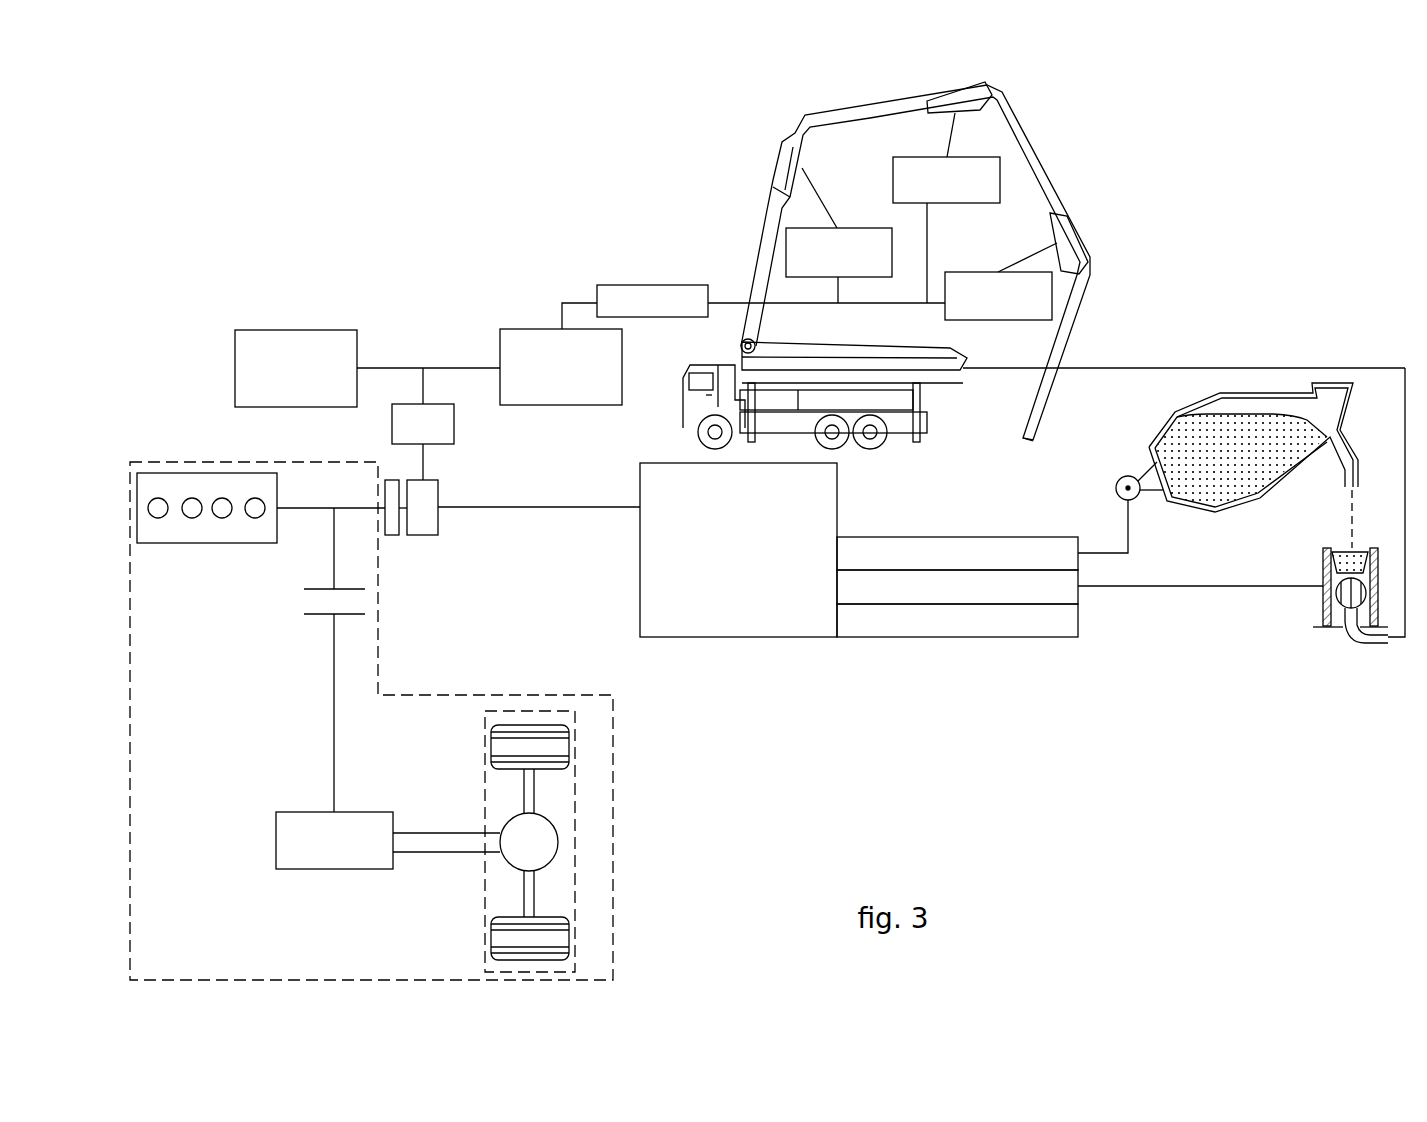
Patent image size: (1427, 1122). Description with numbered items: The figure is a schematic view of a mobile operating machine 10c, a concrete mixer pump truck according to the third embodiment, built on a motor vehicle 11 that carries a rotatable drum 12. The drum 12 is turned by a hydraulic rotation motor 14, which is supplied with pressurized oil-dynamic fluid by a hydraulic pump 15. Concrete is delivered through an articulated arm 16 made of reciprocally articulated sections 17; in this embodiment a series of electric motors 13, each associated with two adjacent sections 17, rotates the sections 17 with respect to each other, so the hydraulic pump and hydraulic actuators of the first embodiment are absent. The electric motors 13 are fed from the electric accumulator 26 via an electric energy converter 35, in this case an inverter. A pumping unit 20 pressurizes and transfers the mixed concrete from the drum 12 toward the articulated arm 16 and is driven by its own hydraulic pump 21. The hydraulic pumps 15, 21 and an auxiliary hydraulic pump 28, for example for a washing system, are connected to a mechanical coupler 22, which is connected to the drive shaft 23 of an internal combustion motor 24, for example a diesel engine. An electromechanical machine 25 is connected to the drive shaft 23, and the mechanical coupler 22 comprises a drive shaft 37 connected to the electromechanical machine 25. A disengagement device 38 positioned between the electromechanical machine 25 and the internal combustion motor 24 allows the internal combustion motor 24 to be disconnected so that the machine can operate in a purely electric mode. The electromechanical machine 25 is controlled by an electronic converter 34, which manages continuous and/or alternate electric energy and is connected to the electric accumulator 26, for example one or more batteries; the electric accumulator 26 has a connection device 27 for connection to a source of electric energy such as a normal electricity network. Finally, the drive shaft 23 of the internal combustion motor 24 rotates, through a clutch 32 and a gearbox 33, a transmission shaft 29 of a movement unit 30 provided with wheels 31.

The mobile operating machine 10c is at (162, 342).
The motor vehicle 11 is at (325, 450).
The rotatable drum 12 is at (1155, 433).
The electric motors 13 is at (934, 193).
The hydraulic rotation motor 14 is at (1128, 476).
The hydraulic pump 15 is at (959, 560).
The articulated arm 16 is at (1045, 122).
The articulated sections 17 is at (868, 111).
The pumping unit 20 is at (1318, 550).
The hydraulic pump 21 is at (887, 589).
The mechanical coupler 22 is at (728, 563).
The drive shaft 23 is at (357, 510).
The internal combustion motor 24 is at (167, 483).
The electromechanical machine 25 is at (411, 521).
The electric accumulator 26 is at (549, 380).
The connection device 27 is at (285, 380).
The auxiliary hydraulic pump 28 is at (1060, 619).
The transmission shaft 29 is at (334, 676).
The movement unit 30 is at (579, 852).
The wheels 31 is at (552, 744).
The clutch 32 is at (315, 616).
The gearbox 33 is at (322, 853).
The electronic converter 34 is at (411, 437).
The electric energy converter 35 is at (641, 315).
The drive shaft 37 is at (538, 505).
The disengagement device 38 is at (393, 523).